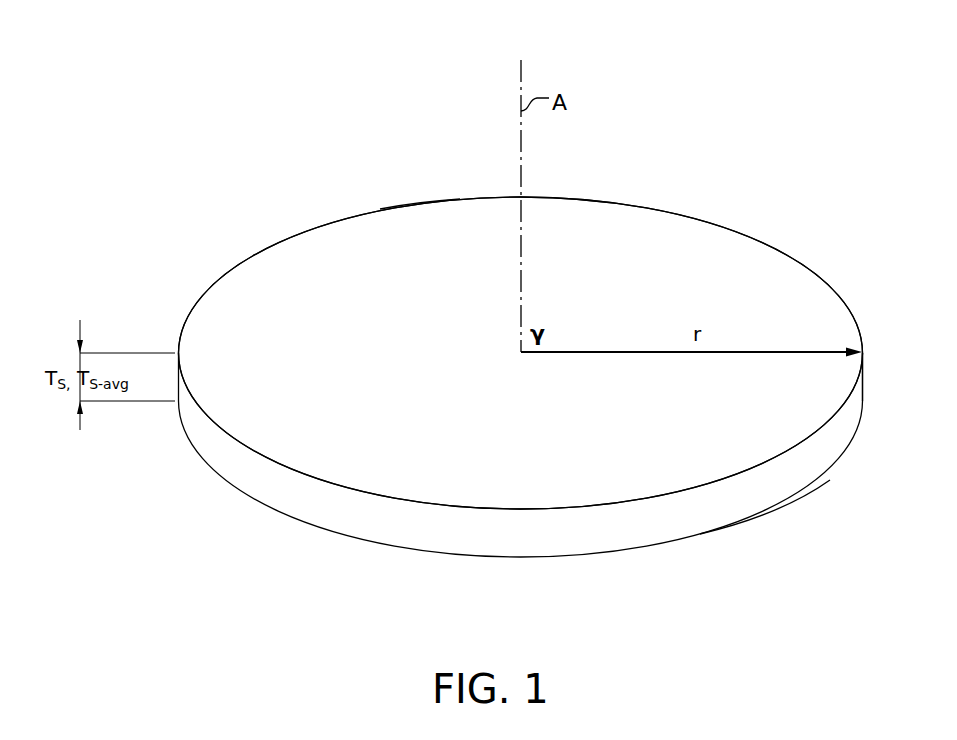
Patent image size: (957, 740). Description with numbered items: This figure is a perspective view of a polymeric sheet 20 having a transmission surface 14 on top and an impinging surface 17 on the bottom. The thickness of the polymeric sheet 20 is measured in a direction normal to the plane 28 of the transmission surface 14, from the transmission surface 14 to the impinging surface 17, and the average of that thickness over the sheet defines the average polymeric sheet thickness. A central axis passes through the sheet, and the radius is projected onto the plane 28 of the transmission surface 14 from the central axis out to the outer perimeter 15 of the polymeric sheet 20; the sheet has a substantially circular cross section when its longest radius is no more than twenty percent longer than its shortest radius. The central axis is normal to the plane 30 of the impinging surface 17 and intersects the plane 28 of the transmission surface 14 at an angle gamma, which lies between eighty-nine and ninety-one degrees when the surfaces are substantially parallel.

The polymeric sheet 20 is at (184, 103).
The transmission surface 14 is at (310, 262).
The plane of the transmission surface 28 is at (440, 230).
The outer perimeter 15 is at (863, 352).
The impinging surface 17 is at (700, 532).
The plane of the impinging surface 30 is at (777, 505).